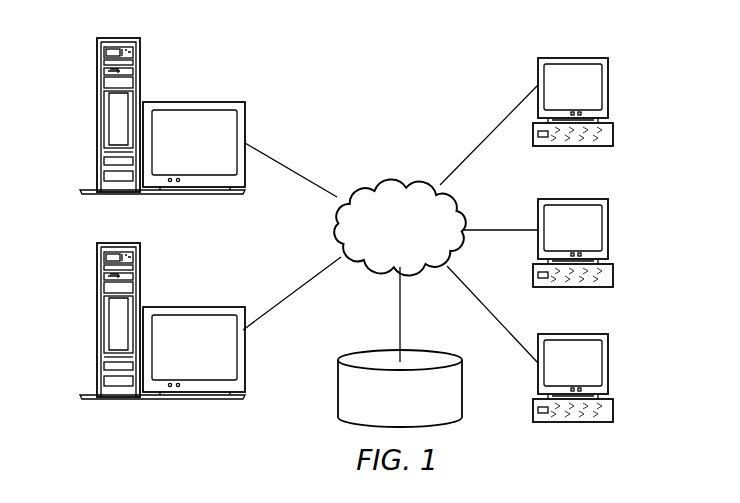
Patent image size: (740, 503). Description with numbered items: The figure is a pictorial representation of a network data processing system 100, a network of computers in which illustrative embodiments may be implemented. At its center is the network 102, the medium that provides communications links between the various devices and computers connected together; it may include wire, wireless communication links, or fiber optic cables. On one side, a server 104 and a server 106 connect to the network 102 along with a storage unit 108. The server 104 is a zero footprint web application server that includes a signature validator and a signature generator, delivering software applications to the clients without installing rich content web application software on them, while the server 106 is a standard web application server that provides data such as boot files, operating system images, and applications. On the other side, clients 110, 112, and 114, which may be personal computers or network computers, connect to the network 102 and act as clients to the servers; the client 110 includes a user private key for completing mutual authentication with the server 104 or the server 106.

The network data processing system 100 is at (447, 79).
The network 102 is at (370, 180).
The server 104 is at (98, 114).
The server 106 is at (98, 319).
The storage unit 108 is at (337, 400).
The client 110 is at (608, 89).
The client 112 is at (608, 228).
The client 114 is at (608, 365).